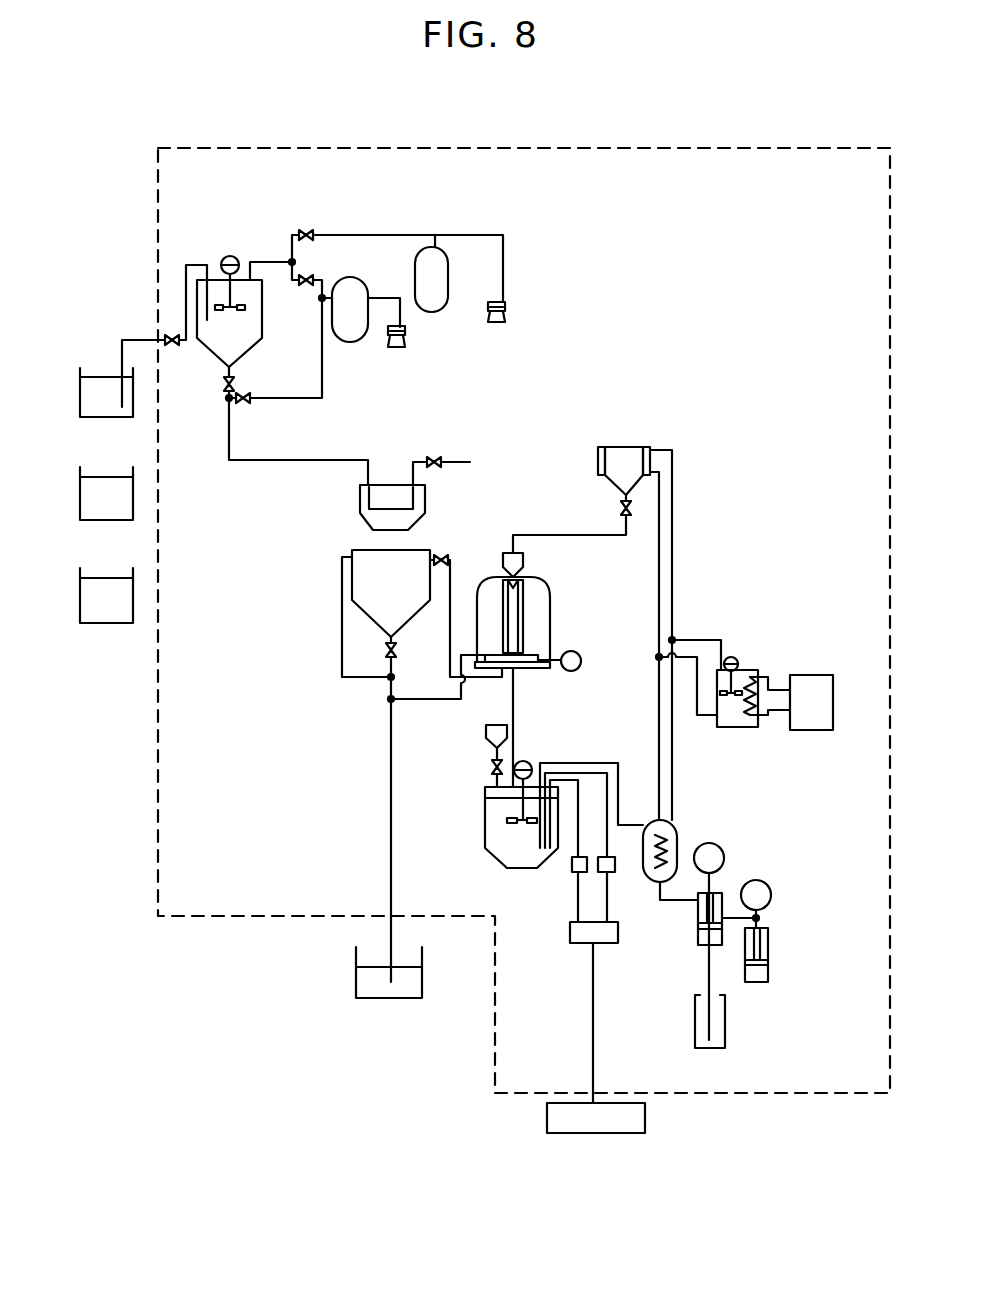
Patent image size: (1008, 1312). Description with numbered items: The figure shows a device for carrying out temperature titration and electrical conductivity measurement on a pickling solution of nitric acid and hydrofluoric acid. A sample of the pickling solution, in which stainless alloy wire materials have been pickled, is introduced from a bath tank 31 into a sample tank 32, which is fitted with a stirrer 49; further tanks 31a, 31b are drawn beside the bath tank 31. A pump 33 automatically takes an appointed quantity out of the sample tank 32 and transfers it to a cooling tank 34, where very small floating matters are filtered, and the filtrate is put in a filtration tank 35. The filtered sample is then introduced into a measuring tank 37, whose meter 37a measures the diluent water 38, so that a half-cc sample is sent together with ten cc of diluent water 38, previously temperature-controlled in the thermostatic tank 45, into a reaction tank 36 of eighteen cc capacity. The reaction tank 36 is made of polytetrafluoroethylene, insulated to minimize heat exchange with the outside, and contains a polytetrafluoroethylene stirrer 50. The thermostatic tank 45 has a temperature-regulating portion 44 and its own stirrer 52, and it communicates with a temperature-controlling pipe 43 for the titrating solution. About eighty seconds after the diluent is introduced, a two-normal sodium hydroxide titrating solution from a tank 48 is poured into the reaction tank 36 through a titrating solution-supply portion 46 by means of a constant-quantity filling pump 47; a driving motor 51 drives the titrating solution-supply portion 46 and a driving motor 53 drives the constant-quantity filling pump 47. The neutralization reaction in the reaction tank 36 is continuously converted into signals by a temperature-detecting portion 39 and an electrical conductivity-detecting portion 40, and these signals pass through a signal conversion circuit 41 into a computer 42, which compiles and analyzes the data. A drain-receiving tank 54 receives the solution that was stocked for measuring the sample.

The bath tank 31 is at (80, 385).
The liquid supply tank 31a is at (80, 495).
The liquid supply tank 31b is at (80, 598).
The sample tank 32 is at (237, 350).
The pump 33 is at (395, 347).
The cooling tank 34 is at (383, 485).
The filtration tank 35 is at (372, 550).
The reaction tank 36 is at (482, 837).
The measuring tank 37 is at (552, 588).
The meter 37a is at (582, 656).
The diluent water 38 is at (622, 447).
The temperature-detecting portion 39 is at (572, 862).
The electrical conductivity-detecting portion 40 is at (615, 862).
The signal conversion circuit 41 is at (572, 940).
The computer 42 is at (645, 1120).
The temperature-controlling pipe 43 is at (670, 838).
The temperature-regulating portion 44 is at (778, 673).
The thermostatic tank 45 is at (735, 727).
The titrating solution-supply portion 46 is at (697, 935).
The constant-quantity filling pump 47 is at (768, 965).
The tank 48 is at (725, 1030).
The stirrer 49 is at (228, 257).
The stirrer 50 is at (512, 817).
The driving motor 51 is at (723, 852).
The stirrer 52 is at (731, 657).
The driving motor 53 is at (770, 892).
The drain-receiving tank 54 is at (356, 978).